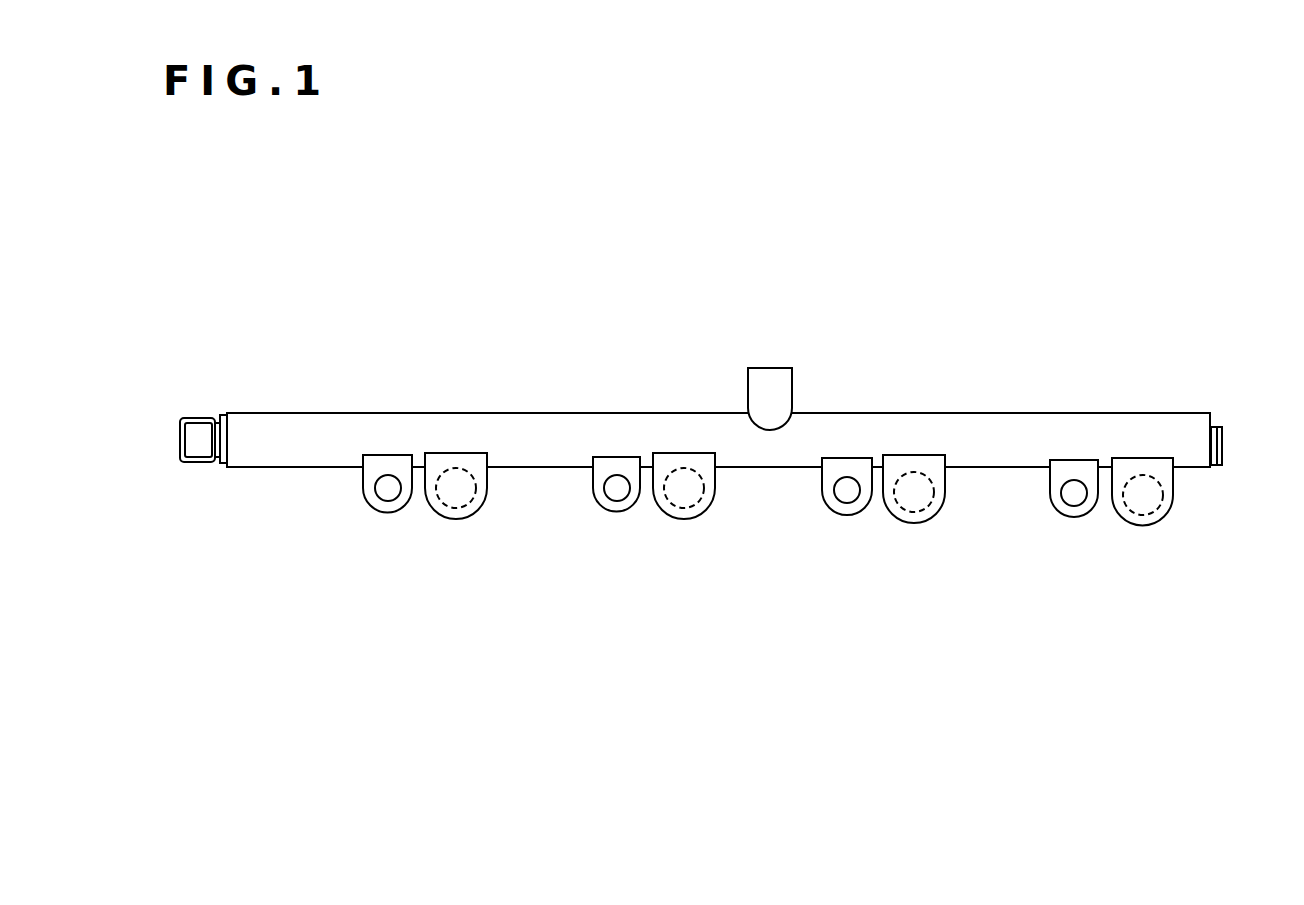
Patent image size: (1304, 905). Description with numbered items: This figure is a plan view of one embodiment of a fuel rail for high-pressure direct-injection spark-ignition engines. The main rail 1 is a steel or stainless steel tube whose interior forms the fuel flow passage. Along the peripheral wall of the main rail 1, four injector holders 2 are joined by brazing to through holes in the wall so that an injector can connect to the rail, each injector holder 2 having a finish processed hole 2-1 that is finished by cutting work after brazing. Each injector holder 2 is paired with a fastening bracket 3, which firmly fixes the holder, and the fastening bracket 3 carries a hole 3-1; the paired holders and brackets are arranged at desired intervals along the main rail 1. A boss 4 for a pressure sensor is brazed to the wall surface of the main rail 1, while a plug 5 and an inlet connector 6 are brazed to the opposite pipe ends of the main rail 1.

The main rail 1 is at (560, 423).
The injector holder 2 is at (478, 510).
The finish processed hole 2-1 is at (437, 512).
The fastening bracket 3 is at (380, 512).
The bolt hole 3-1 is at (373, 493).
The boss for a pressure sensor 4 is at (785, 390).
The plug 5 is at (1217, 440).
The inlet connector 6 is at (195, 428).